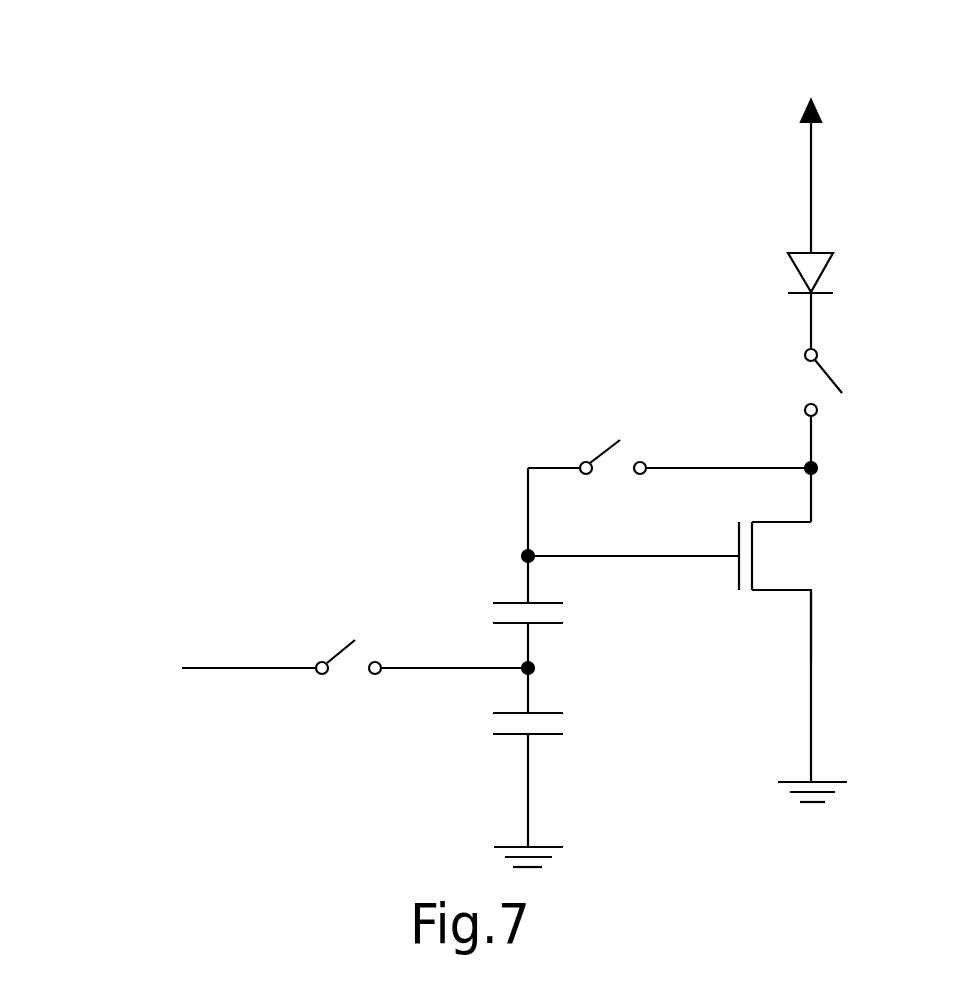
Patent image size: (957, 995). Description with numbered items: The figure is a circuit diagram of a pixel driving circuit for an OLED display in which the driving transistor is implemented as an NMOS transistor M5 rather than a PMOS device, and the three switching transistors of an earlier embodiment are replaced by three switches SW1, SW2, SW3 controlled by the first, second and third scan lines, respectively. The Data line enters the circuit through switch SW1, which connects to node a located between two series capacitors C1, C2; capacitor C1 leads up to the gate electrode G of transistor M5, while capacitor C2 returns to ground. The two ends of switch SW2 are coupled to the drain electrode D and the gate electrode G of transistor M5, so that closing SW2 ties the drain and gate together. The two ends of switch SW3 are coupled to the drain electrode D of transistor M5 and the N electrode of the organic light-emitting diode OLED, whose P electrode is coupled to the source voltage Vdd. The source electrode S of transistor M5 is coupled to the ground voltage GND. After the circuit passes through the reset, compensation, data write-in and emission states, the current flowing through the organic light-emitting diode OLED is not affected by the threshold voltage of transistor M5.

The source voltage Vdd is at (810, 156).
The organic light-emitting diode OLED is at (861, 300).
The switch SW3 is at (782, 408).
The switch SW2 is at (669, 476).
The switch SW1 is at (420, 636).
The NMOS transistor M5 is at (807, 652).
The drain electrode D is at (827, 492).
The gate electrode G is at (630, 538).
The source electrode S is at (830, 625).
The first capacitor C1 is at (557, 612).
The second capacitor C2 is at (558, 767).
The node a is at (540, 666).
The ground voltage GND is at (849, 806).
The data line Data line is at (163, 668).